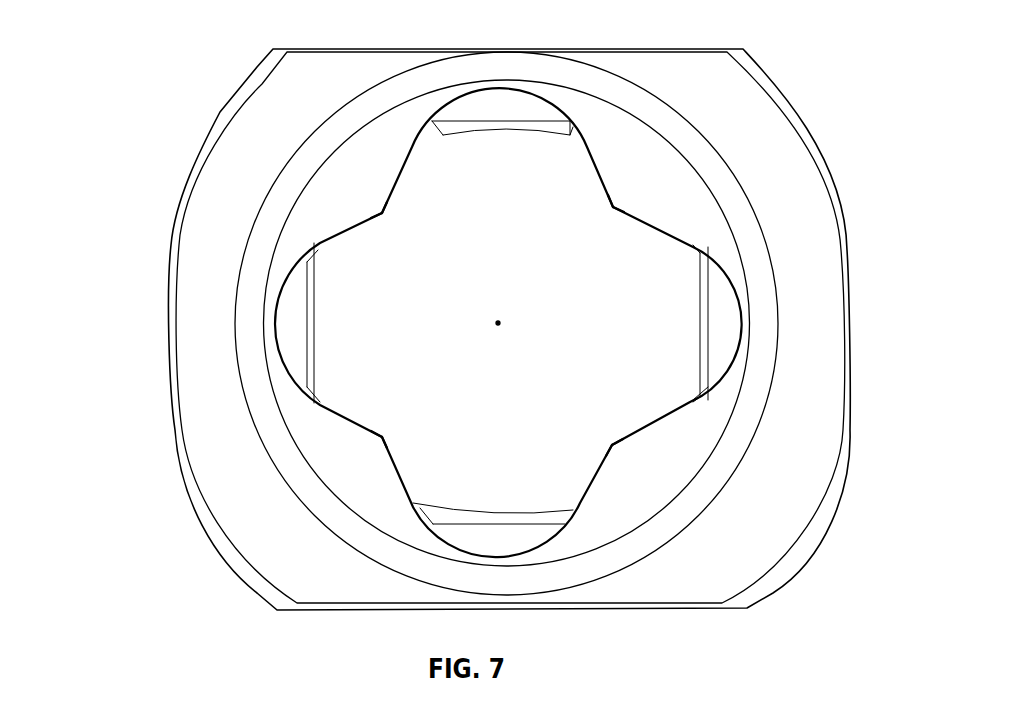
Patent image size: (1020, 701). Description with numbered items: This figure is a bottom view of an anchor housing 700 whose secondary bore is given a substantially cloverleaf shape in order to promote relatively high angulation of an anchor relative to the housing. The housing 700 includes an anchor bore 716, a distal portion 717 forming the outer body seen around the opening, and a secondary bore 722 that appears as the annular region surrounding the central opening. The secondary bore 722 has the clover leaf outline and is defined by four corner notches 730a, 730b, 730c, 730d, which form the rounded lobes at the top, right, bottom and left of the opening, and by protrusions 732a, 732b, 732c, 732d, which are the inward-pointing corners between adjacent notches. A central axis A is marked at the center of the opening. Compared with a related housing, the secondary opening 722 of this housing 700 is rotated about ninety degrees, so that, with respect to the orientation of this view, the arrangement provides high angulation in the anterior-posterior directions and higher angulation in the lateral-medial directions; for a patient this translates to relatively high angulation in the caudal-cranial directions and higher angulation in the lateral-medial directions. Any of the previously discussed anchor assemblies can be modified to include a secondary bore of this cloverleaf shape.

The anchor housing 700 is at (200, 60).
The distal portion 717 is at (167, 215).
The secondary bore 722 is at (690, 434).
The anchor bore 716 is at (329, 317).
The corner notch 730a is at (518, 115).
The corner notch 730b is at (727, 316).
The corner notch 730c is at (503, 538).
The corner notch 730d is at (293, 315).
The protrusion 732a is at (614, 206).
The protrusion 732b is at (613, 444).
The protrusion 732c is at (382, 438).
The protrusion 732d is at (382, 213).
The axis A is at (498, 322).